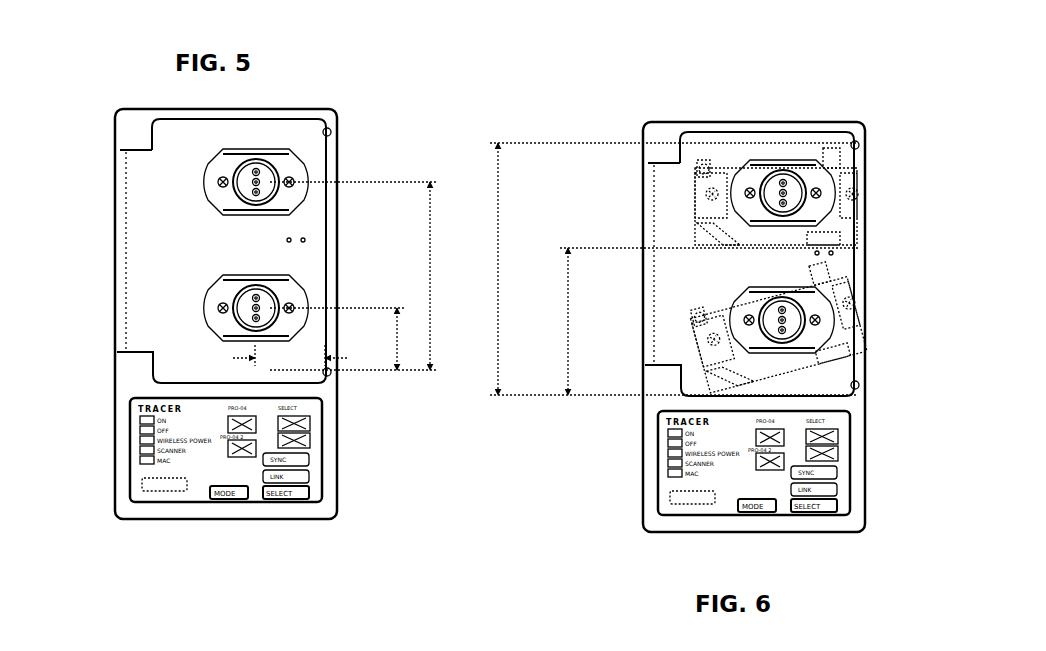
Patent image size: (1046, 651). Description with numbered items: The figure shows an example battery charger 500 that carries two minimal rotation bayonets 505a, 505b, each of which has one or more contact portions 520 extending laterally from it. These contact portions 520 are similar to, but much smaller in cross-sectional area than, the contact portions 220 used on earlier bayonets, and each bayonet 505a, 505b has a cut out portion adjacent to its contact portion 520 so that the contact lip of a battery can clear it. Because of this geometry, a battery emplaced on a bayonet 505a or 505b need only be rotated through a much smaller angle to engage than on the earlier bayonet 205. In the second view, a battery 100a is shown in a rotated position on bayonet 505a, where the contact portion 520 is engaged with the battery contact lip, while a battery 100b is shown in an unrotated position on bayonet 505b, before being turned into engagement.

In FIG. 5, the battery charger 500 is at (362, 110).
In FIG. 6, the battery charger 500 is at (806, 93).
In FIG. 5, the bayonet 205 is at (198, 337).
In FIG. 5, the contact portion 520 is at (207, 160).
In FIG. 6, the contact portion 520 is at (752, 307).
In FIG. 5, the minimal rotation bayonet 505a is at (203, 183).
In FIG. 6, the minimal rotation bayonet 505a is at (745, 170).
In FIG. 5, the minimal rotation bayonet 505b is at (200, 318).
In FIG. 6, the minimal rotation bayonet 505b is at (752, 307).
In FIG. 6, the battery 100a is at (785, 152).
In FIG. 6, the battery 100b is at (740, 363).
In FIG. 6, the contact portion 220 is at (730, 188).